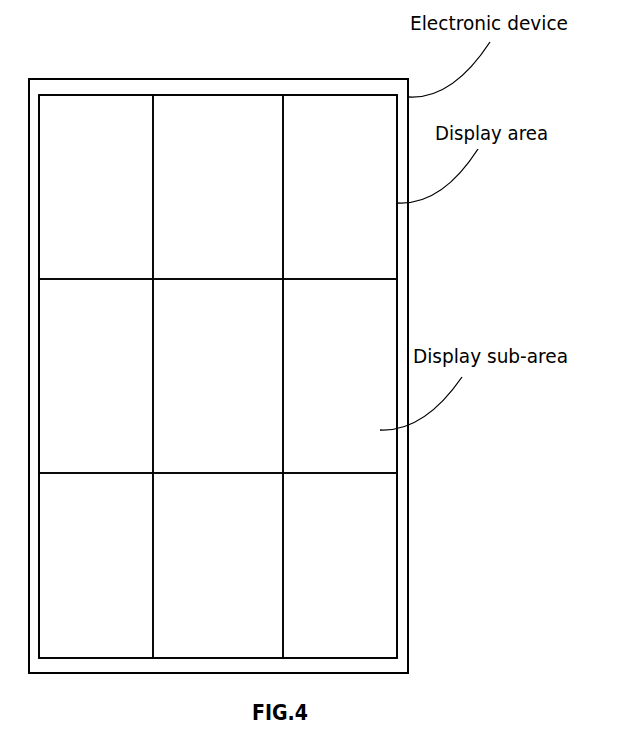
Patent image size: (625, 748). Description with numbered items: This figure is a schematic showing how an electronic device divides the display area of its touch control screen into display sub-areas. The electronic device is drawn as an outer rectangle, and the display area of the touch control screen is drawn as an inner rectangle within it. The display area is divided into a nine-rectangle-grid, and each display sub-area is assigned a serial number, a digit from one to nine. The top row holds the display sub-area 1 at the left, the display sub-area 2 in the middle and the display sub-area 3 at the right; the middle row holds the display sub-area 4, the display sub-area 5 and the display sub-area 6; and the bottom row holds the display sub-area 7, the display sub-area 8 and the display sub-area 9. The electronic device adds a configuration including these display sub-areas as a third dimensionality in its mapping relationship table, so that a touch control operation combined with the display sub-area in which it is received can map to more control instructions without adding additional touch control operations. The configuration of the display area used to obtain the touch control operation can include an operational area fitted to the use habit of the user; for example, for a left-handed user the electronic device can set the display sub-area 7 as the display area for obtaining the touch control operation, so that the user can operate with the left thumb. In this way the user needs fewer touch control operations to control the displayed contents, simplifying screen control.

The display sub-area 1 is at (96, 187).
The display sub-area 2 is at (218, 187).
The display sub-area 3 is at (340, 187).
The display sub-area 4 is at (96, 376).
The display sub-area 5 is at (218, 376).
The display sub-area 6 is at (340, 376).
The display sub-area 7 is at (96, 565).
The display sub-area 8 is at (218, 565).
The display sub-area 9 is at (340, 565).